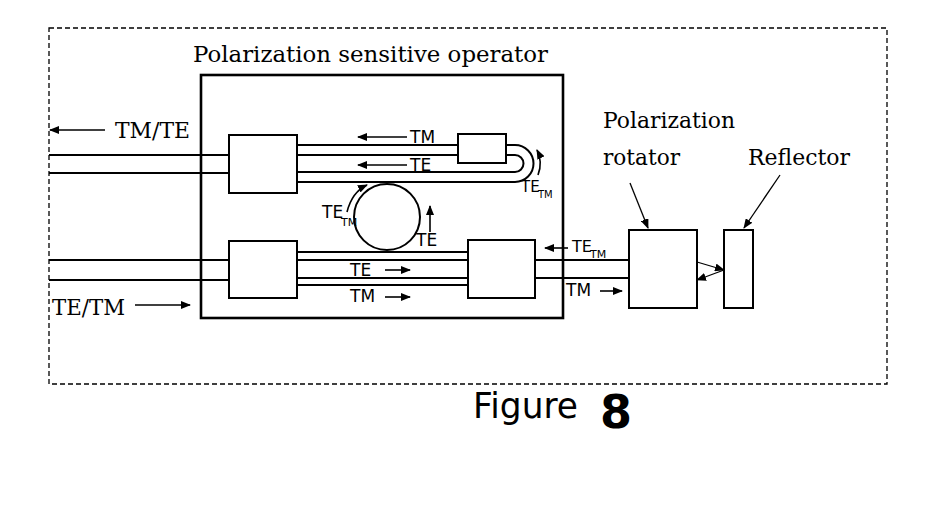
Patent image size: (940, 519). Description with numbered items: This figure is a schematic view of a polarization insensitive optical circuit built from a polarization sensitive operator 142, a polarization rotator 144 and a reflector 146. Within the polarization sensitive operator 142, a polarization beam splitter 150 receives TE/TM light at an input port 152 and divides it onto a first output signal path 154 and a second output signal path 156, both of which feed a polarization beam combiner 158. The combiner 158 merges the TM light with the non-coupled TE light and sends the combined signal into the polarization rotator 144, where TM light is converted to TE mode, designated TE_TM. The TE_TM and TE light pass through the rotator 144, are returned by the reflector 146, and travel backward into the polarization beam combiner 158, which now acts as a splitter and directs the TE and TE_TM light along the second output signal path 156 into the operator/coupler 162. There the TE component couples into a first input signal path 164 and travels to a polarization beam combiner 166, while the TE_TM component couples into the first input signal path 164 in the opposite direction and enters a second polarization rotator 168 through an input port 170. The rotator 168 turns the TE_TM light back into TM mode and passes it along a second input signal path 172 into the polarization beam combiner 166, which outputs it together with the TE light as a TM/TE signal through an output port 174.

The polarization sensitive operator 142 is at (200, 78).
The polarization rotator 144 is at (665, 229).
The reflector 146 is at (753, 250).
The polarization beam splitter 150 is at (250, 241).
The input port 152 is at (93, 260).
The first output signal path 154 is at (339, 291).
The second output signal path 156 is at (325, 250).
The polarization beam combiner 158 is at (484, 241).
The operator/coupler 162 is at (415, 197).
The first input signal path 164 is at (320, 188).
The polarization beam combiner 166 is at (240, 134).
The second polarization rotator 168 is at (470, 133).
The input port 170 is at (518, 143).
The second input signal path 172 is at (320, 145).
The output port 174 is at (82, 175).